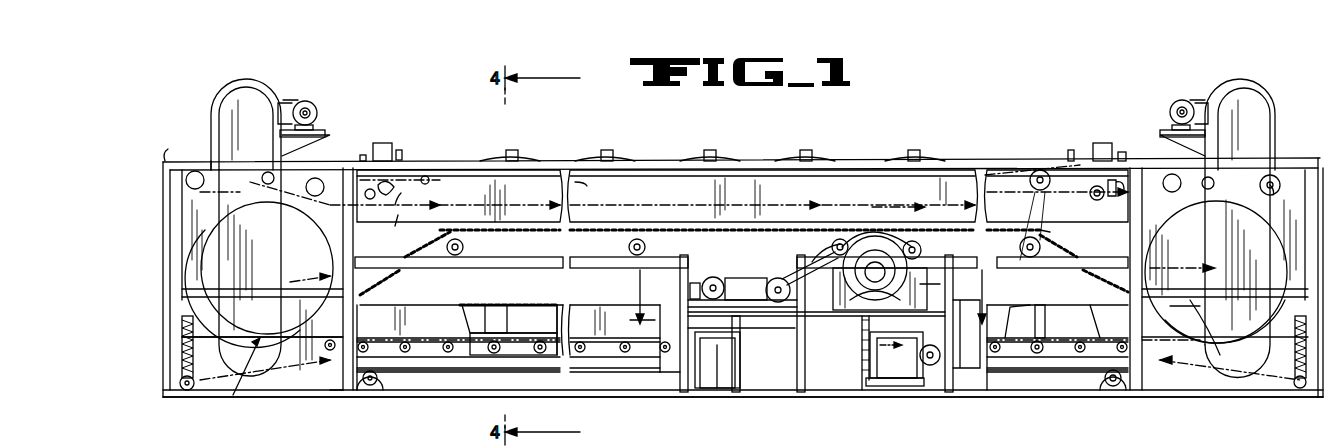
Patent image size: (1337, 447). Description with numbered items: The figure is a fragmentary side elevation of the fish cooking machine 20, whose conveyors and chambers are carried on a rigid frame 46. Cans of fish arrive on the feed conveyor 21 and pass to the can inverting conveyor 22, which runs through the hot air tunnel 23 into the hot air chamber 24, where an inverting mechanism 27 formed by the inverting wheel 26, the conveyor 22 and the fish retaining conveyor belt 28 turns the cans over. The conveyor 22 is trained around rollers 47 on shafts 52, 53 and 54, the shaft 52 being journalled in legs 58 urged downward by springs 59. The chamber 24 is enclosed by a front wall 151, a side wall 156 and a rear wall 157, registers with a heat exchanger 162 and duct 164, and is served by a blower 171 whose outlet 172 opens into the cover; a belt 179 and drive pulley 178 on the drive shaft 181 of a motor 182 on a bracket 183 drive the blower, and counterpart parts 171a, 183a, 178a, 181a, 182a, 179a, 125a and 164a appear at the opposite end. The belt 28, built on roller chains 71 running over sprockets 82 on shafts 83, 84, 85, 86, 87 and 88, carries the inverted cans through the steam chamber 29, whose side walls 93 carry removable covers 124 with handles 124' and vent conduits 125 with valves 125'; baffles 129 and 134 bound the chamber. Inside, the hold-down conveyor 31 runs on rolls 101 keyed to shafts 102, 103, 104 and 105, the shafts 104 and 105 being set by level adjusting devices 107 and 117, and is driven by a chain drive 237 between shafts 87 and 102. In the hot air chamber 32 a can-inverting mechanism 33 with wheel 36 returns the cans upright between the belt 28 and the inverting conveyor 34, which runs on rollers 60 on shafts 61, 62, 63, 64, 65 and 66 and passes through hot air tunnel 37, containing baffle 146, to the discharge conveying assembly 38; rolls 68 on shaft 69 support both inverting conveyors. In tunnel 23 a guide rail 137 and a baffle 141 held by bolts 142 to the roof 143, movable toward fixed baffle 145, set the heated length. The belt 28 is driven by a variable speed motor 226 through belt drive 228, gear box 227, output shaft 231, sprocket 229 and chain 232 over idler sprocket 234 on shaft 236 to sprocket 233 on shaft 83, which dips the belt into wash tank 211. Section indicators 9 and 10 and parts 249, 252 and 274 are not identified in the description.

The fish cooking machine 20 is at (987, 156).
The blower 171 is at (250, 78).
The right endless belt loop 171a is at (1252, 80).
The outlet 172 is at (215, 158).
The bracket 183 is at (285, 144).
The motor bracket 183a is at (1208, 145).
The hot air chamber 24 is at (208, 158).
The front wall 151 is at (180, 147).
The drive pulley 178 is at (308, 105).
The motor 178a is at (1178, 110).
The drive shaft 181 is at (312, 110).
The motor shaft 181a is at (1195, 110).
The motor 182 is at (318, 118).
The motor housing 182a is at (1180, 100).
The belt 179 is at (284, 102).
The motor mount 179a is at (1203, 97).
The baffle 129 is at (352, 158).
The conduits 125 is at (393, 135).
The valves 125' is at (412, 140).
The switch box 125a is at (1098, 147).
The steam chamber 29 is at (498, 185).
The shaft 103 is at (430, 178).
The level adjusting device 107 is at (400, 192).
The shaft 104 is at (382, 208).
The rolls 101 is at (360, 198).
The rollers 47 is at (205, 185).
The fish retaining conveyor belt 28 is at (1213, 306).
The removable covers 124 is at (712, 147).
The handles 124' is at (728, 145).
The hold-down conveyor 31 is at (625, 192).
The side walls 93 is at (810, 197).
The rigid frame 46 is at (872, 168).
The sprockets 82 is at (430, 247).
The shaft 86 is at (465, 248).
The shaft 85 is at (628, 248).
The shaft 84 is at (840, 238).
The shaft 88 is at (921, 251).
The shaft 87 is at (1032, 254).
The section line 9 is at (898, 280).
The sprocket 233 is at (910, 240).
The shaft 236 is at (860, 300).
The wash tank 211 is at (837, 353).
The rod 274 is at (862, 356).
The transverse discharge conveying assembly 38 is at (858, 370).
The shaft 66 is at (928, 355).
The rollers 60 is at (933, 366).
The hot air tunnel 23 is at (418, 307).
The rear wall 157 is at (370, 290).
The baffle 141 is at (488, 315).
The bolts 142 is at (500, 306).
The roof 143 is at (548, 306).
The guide rail 137 is at (478, 327).
The shaft 69 is at (538, 345).
The rolls 68 is at (400, 344).
The can inverting conveyor 22 is at (448, 370).
The inverting conveyor 34 is at (1068, 370).
The shaft 54 is at (675, 380).
The section line 10 is at (808, 297).
The bracket 249 is at (695, 292).
The fixed baffle 145 is at (655, 326).
The variable speed motor 226 is at (710, 292).
The belt drive 228 is at (732, 287).
The gear box 227 is at (768, 290).
The chain 232 is at (780, 278).
The idler sprocket 234 is at (820, 272).
The sprocket 229 is at (784, 305).
The output shaft 231 is at (758, 354).
The housing 252 is at (740, 342).
The feed conveyor 21 is at (718, 385).
The shaft 83 is at (935, 284).
The hot air chamber 32 is at (1277, 170).
The shaft 61 is at (1170, 170).
The shaft 62 is at (1212, 180).
The shaft 63 is at (1280, 192).
The baffle 134 is at (1125, 152).
The shaft 102 is at (1030, 183).
The shaft 105 is at (1090, 198).
The level adjusting device 117 is at (1118, 192).
The chain drive 237 is at (1050, 232).
The roller chains 71 is at (525, 230).
The baffle 146 is at (1050, 312).
The hot air tunnel 37 is at (1103, 315).
The can-inverting mechanism 33 is at (1215, 355).
The wheel 36 is at (1195, 268).
The drum 164a is at (1216, 272).
The side wall 156 is at (267, 268).
The duct 164 is at (242, 288).
The inverting wheel 26 is at (292, 282).
The springs 59 is at (262, 340).
The legs 58 is at (194, 366).
The shaft 64 is at (1301, 390).
The shaft 52 is at (180, 385).
The inverting mechanism 27 is at (245, 385).
The shaft 53 is at (367, 384).
The heat exchanger 162 is at (333, 401).
The shaft 65 is at (1117, 387).